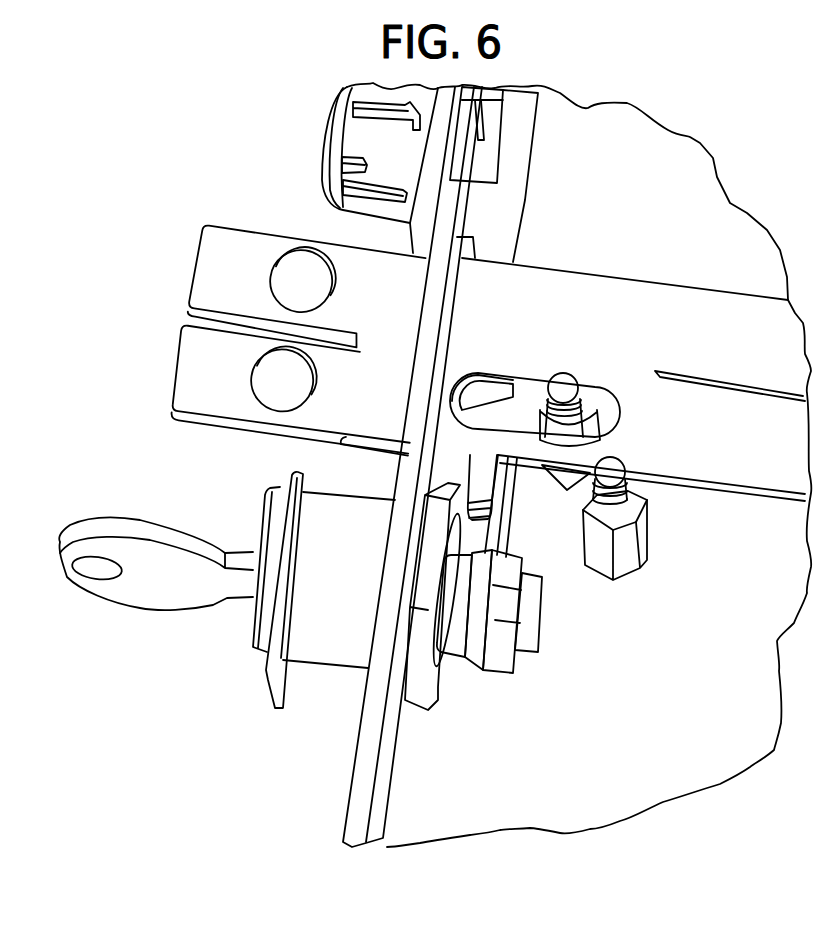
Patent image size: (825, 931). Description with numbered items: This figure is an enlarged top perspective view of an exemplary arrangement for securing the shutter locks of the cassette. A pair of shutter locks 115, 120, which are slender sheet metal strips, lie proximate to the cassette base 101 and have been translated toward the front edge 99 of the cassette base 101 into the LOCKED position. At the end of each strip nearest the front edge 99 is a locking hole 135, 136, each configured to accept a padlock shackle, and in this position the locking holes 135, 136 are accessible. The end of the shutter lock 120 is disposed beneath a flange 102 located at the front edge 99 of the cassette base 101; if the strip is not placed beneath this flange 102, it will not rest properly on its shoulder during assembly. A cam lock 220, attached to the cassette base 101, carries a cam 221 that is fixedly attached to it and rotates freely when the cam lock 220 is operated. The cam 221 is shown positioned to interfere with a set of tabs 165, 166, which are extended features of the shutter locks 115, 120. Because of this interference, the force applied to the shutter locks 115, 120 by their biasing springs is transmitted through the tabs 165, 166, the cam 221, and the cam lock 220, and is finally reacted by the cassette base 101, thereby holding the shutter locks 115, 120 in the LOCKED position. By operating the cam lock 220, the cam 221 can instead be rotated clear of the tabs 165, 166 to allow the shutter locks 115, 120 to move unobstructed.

The front edge 99 is at (338, 796).
The cassette base 101 is at (646, 784).
The flange 102 is at (447, 247).
The shutter lock 115 is at (283, 241).
The shutter lock 120 is at (229, 403).
The locking hole 135 is at (297, 248).
The locking hole 136 is at (262, 410).
The tab 165 is at (484, 505).
The tab 166 is at (490, 487).
The cam lock 220 is at (262, 613).
The cam 221 is at (507, 520).